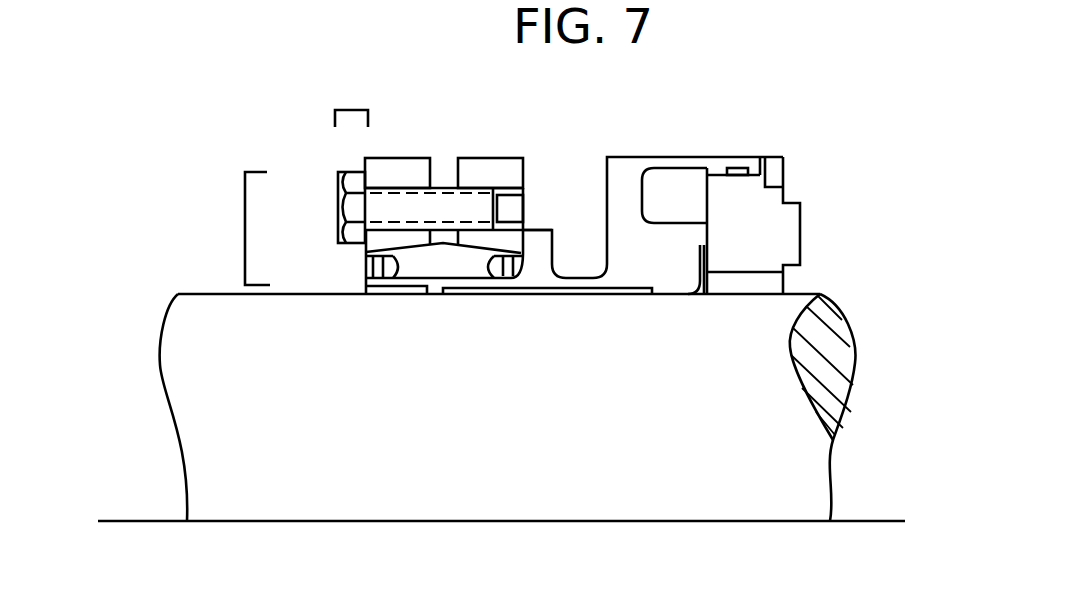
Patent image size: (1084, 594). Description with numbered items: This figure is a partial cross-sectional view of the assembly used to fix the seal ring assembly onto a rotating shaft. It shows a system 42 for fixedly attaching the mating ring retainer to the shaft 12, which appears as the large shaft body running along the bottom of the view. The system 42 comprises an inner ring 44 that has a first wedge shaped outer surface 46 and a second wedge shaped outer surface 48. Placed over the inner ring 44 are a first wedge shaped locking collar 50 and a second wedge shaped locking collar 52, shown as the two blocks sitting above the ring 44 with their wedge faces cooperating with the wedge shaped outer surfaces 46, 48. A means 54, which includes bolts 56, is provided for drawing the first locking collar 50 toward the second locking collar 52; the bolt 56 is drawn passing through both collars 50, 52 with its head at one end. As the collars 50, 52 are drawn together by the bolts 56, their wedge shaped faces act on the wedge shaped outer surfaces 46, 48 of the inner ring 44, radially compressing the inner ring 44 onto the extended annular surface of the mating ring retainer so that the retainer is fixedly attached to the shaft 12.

The shaft 12 is at (577, 505).
The system 42 is at (243, 193).
The inner ring 44 is at (437, 268).
The first wedge shaped outer surface 46 is at (399, 262).
The second wedge shaped outer surface 48 is at (490, 265).
The first wedge shaped locking collar 50 is at (410, 173).
The second wedge shaped locking collar 52 is at (502, 174).
The means for drawing 54 is at (352, 110).
The bolts 56 is at (352, 172).